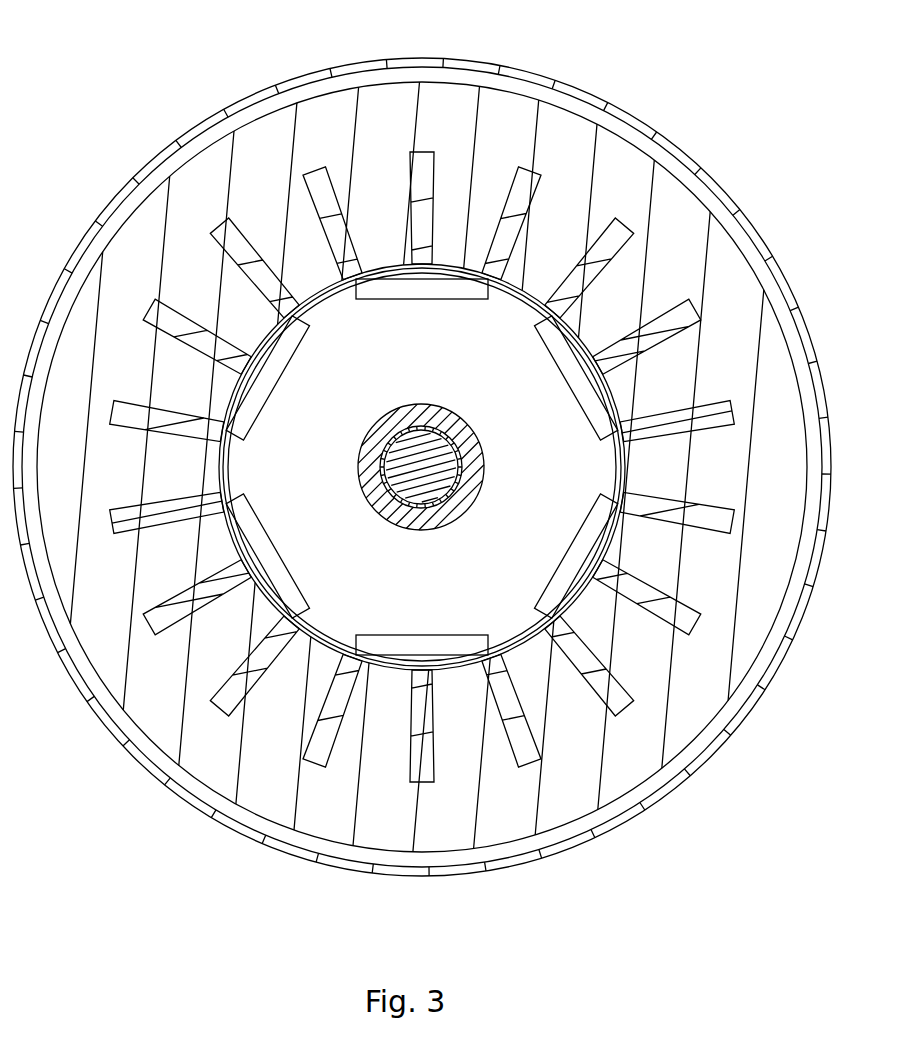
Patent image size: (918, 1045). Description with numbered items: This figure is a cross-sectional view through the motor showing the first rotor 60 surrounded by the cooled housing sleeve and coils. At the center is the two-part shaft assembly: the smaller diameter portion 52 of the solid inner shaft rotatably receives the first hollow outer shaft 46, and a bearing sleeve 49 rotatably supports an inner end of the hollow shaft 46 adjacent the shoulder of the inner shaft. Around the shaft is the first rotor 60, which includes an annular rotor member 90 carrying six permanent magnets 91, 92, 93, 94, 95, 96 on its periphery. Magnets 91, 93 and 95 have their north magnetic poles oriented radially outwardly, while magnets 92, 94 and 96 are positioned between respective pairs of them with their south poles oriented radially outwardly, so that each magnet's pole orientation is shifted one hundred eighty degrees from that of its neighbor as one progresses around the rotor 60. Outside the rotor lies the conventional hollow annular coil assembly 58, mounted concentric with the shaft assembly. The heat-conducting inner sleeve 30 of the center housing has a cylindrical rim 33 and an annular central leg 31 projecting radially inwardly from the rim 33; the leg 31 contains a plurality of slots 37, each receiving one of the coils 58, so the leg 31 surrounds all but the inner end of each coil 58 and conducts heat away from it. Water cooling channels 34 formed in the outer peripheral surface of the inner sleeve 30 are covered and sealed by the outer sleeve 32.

The inner sleeve 30 is at (108, 189).
The annular central leg 31 is at (267, 207).
The outer sleeve 32 is at (250, 98).
The cylindrical rim 33 is at (72, 297).
The water cooling channels 34 is at (305, 97).
The slots 37 is at (630, 340).
The first hollow outer shaft 46 is at (453, 422).
The bearing sleeve 49 is at (483, 447).
The smaller diameter portion 52 is at (410, 482).
The coil assembly 58 is at (515, 175).
The first rotor 60 is at (527, 298).
The annular rotor member 90 is at (422, 438).
The permanent magnet 91 is at (386, 295).
The permanent magnet 92 is at (583, 395).
The permanent magnet 93 is at (560, 560).
The permanent magnet 94 is at (450, 645).
The permanent magnet 95 is at (257, 517).
The permanent magnet 96 is at (243, 405).